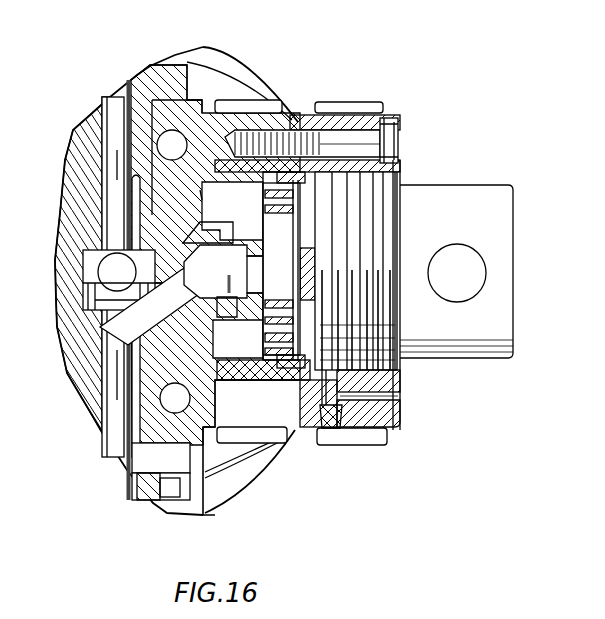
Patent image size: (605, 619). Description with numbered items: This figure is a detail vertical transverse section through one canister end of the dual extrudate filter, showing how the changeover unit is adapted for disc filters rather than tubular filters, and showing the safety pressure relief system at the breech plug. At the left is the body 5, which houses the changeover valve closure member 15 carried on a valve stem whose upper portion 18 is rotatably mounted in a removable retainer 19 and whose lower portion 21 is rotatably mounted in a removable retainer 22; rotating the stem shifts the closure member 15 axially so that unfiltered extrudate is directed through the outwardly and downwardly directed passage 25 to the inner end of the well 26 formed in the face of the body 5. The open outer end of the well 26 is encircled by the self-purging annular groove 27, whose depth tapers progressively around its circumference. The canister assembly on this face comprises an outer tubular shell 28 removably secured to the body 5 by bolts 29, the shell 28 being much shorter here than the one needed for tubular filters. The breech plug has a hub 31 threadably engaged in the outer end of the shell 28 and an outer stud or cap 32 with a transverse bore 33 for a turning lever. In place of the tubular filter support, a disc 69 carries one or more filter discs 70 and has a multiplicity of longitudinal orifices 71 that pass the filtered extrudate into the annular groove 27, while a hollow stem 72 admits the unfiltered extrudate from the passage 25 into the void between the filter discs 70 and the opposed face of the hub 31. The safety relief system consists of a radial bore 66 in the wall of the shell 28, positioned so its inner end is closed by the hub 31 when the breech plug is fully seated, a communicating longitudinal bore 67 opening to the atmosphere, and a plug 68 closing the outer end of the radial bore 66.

The body 5 is at (197, 96).
The valve closure member 15 is at (90, 286).
The upper portion of valve stem 18 is at (107, 120).
The removable retainer 19 is at (159, 82).
The lower portion of valve stem 21 is at (133, 455).
The removable retainer 22 is at (205, 493).
The passage 25 is at (140, 335).
The well 26 is at (193, 262).
The annular groove 27 is at (208, 196).
The outer tubular shell 28 is at (388, 422).
The bolts 29 is at (398, 150).
The hub 31 is at (395, 363).
The outer stud or cap 32 is at (433, 197).
The transverse bore 33 is at (473, 265).
The radial bore 66 is at (310, 415).
The longitudinal bore 67 is at (395, 402).
The plug 68 is at (333, 428).
The disc 69 is at (263, 366).
The filter discs 70 is at (303, 296).
The longitudinal orifices 71 is at (268, 186).
The hollow stem 72 is at (237, 338).